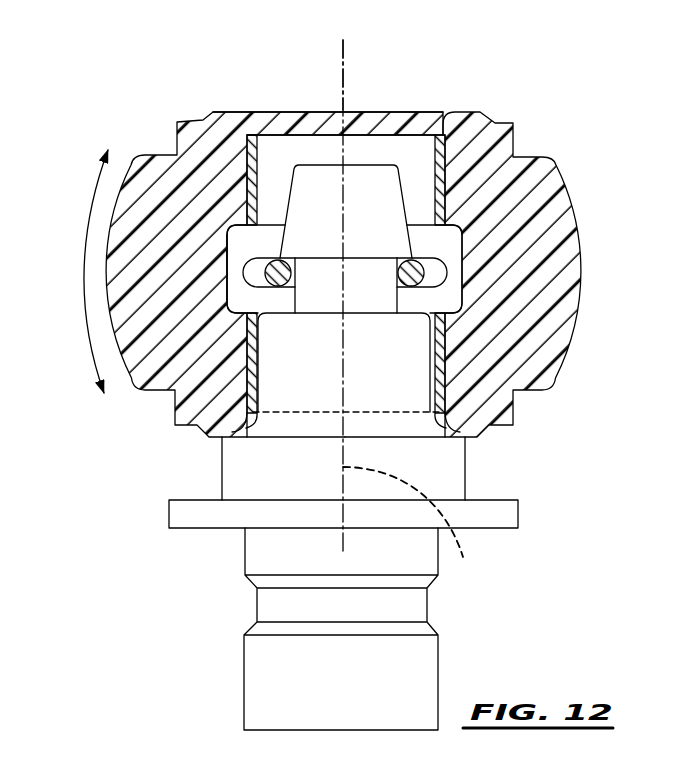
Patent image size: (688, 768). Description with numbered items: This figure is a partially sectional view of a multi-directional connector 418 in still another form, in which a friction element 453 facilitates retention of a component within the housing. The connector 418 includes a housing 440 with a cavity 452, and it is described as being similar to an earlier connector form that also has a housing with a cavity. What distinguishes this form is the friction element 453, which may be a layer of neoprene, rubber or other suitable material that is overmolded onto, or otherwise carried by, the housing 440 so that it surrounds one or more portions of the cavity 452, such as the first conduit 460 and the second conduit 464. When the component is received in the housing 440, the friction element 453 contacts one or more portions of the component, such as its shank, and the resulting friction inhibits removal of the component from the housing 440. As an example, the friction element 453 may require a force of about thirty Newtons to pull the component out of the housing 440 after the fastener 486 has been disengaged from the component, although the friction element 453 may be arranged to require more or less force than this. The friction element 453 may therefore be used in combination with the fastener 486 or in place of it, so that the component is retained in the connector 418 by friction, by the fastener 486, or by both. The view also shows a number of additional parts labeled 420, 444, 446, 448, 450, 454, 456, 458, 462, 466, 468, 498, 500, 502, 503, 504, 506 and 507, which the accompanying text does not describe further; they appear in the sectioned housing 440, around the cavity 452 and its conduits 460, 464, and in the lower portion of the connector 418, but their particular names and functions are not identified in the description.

The multi-directional connector 418 is at (156, 66).
The connector 420 is at (189, 662).
The housing 440 is at (144, 153).
The housing sidewall 444 is at (127, 192).
The cap 446 is at (220, 112).
The cup wall 448 is at (248, 133).
The cup 450 is at (259, 137).
The cavity 452 is at (245, 175).
The friction element 453 is at (262, 152).
The cup bottom 454 is at (219, 435).
The flange wall 456 is at (230, 428).
The flange 458 is at (250, 426).
The first conduit 460 is at (262, 165).
The axis 462 is at (346, 92).
The second conduit 464 is at (437, 400).
The passage 466 is at (422, 522).
The collar 468 is at (240, 256).
The fastener 486 is at (247, 318).
The body 498 is at (437, 354).
The rim 500 is at (440, 435).
The O-ring 502 is at (396, 302).
The O-ring 503 is at (270, 292).
The plunger surface 504 is at (383, 165).
The bore 506 is at (228, 255).
The plunger top 507 is at (367, 165).